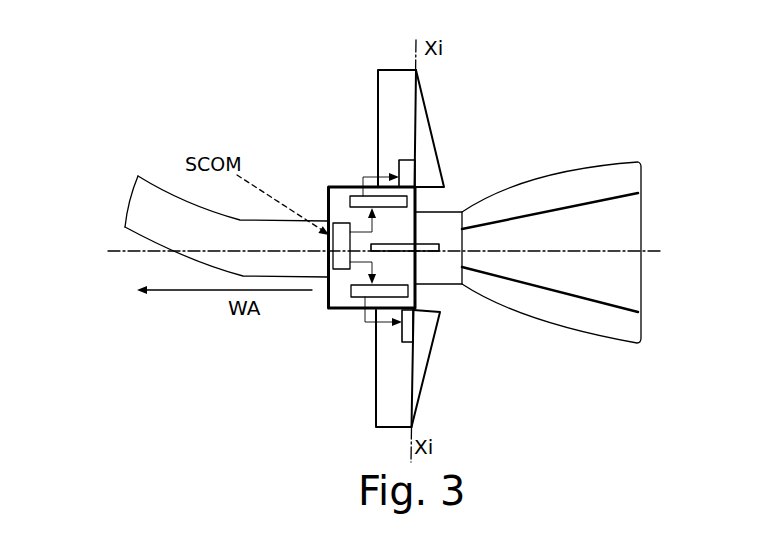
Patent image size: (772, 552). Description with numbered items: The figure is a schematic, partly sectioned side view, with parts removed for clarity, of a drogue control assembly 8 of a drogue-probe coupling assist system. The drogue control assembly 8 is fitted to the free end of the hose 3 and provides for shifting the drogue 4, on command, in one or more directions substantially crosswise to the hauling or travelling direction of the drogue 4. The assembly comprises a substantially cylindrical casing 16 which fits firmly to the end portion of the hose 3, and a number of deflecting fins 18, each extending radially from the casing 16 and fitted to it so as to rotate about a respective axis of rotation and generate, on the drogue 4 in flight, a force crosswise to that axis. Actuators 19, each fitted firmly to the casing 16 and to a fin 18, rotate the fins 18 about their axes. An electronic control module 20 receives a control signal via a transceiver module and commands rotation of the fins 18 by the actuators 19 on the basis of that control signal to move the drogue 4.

The hose 3 is at (125, 225).
The drogue 4 is at (650, 153).
The drogue control assembly 8 is at (342, 133).
The casing 16 is at (338, 310).
The deflecting fins 18 is at (420, 248).
The actuators 19 is at (405, 174).
The electronic control module 20 is at (329, 253).